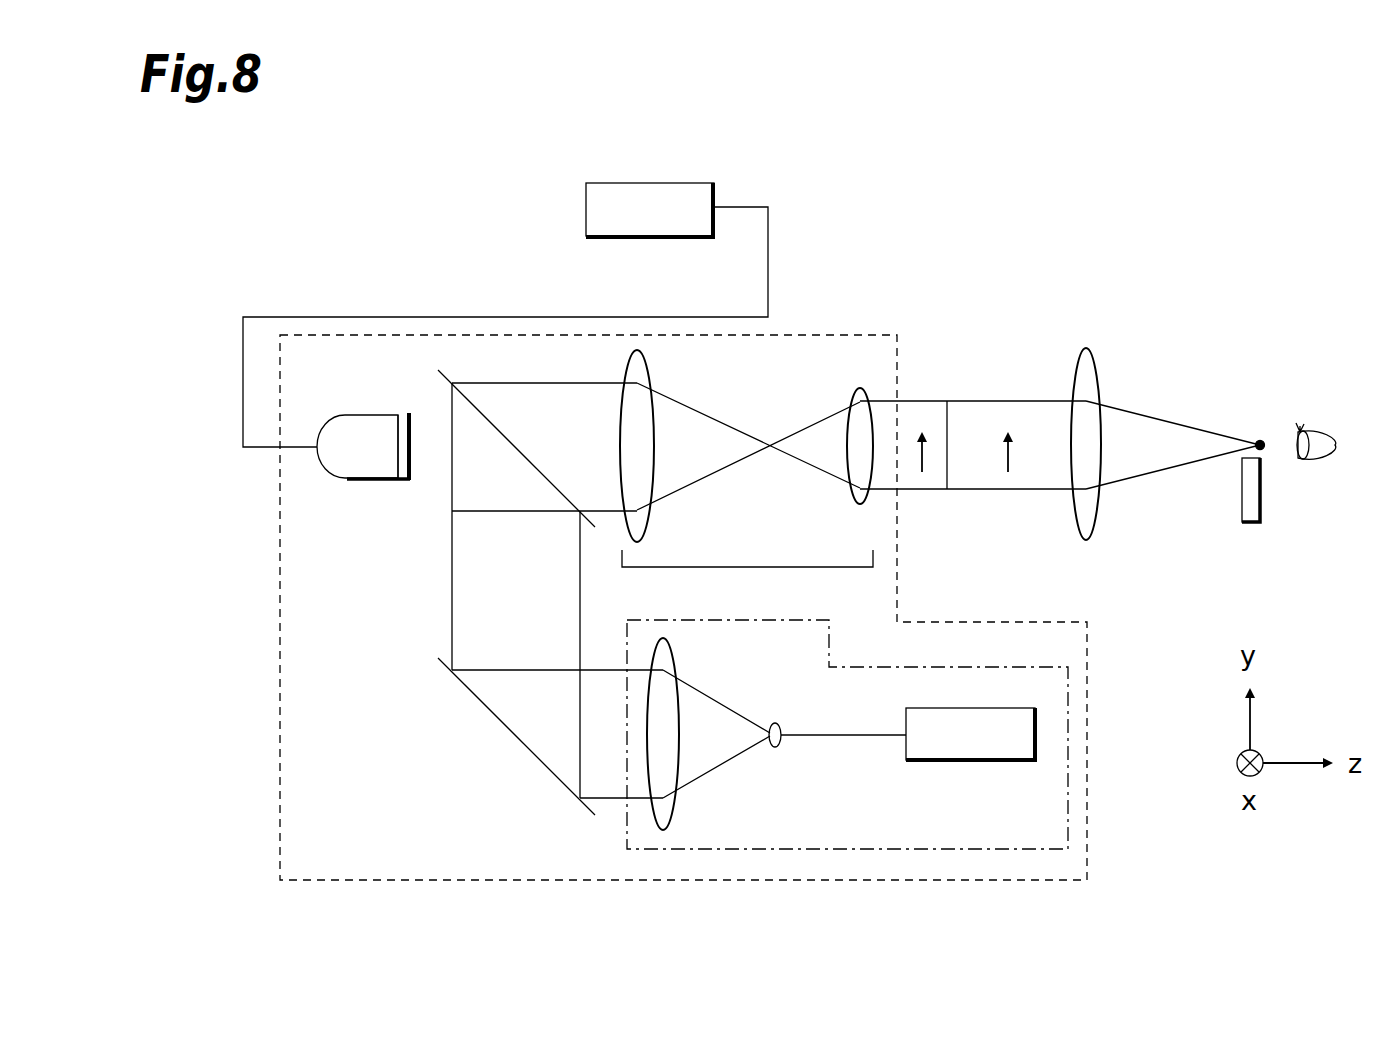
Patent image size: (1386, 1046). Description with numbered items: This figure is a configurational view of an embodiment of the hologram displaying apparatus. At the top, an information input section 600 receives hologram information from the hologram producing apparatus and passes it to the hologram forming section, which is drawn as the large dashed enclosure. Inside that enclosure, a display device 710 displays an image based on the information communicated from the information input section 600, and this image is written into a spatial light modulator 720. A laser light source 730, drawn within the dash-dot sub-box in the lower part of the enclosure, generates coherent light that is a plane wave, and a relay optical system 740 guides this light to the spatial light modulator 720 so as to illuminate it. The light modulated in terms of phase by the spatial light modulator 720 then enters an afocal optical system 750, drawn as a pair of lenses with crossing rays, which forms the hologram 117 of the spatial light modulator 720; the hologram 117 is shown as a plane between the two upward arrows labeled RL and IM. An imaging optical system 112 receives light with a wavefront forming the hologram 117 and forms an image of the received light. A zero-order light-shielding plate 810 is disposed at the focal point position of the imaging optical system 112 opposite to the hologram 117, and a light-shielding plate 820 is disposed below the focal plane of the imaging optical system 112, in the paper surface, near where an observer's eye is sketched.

The information input section 600 is at (648, 181).
The display device 710 is at (355, 480).
The spatial light modulator 720 is at (408, 413).
The relay optical system 740 is at (277, 638).
The afocal optical system 750 is at (695, 567).
The laser light source 730 is at (620, 828).
The hologram 117 is at (947, 490).
The imaging optical system 112 is at (1090, 362).
The zero-order light-shielding plate 810 is at (1262, 440).
The light-shielding plate 820 is at (1262, 500).
The reticle light RL is at (930, 445).
The image IM is at (1015, 445).